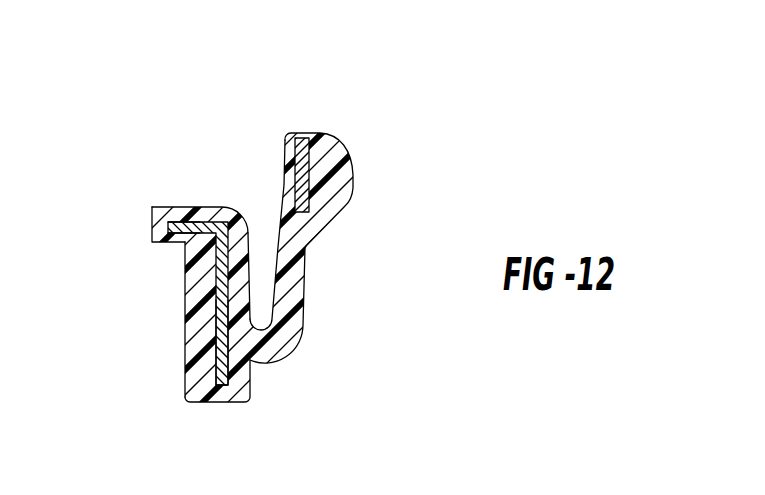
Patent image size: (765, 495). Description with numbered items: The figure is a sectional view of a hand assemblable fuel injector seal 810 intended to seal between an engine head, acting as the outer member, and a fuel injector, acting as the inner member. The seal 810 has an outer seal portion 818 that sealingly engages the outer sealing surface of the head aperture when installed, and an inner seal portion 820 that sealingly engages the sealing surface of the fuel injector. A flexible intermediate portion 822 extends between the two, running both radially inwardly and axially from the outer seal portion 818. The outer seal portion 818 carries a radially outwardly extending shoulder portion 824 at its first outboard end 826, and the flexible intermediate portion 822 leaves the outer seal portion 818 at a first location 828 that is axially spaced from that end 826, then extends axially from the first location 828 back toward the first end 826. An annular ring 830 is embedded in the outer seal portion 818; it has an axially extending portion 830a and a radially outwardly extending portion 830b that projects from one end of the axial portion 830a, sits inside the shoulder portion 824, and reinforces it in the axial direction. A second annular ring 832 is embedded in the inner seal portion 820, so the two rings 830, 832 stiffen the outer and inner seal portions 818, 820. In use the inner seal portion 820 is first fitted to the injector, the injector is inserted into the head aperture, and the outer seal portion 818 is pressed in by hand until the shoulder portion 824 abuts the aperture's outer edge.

The hand assemblable fuel injector seal 810 is at (315, 225).
The outer seal portion 818 is at (193, 301).
The inner seal portion 820 is at (337, 182).
The flexible intermediate portion 822 is at (290, 296).
The radially outwardly extending shoulder portion 824 is at (172, 243).
The first outboard end 826 is at (193, 207).
The first location 828 is at (246, 348).
The annular ring 830 is at (205, 275).
The axially extending portion 830a is at (223, 320).
The radially outwardly extending portion 830b is at (186, 234).
The second annular ring 832 is at (302, 156).